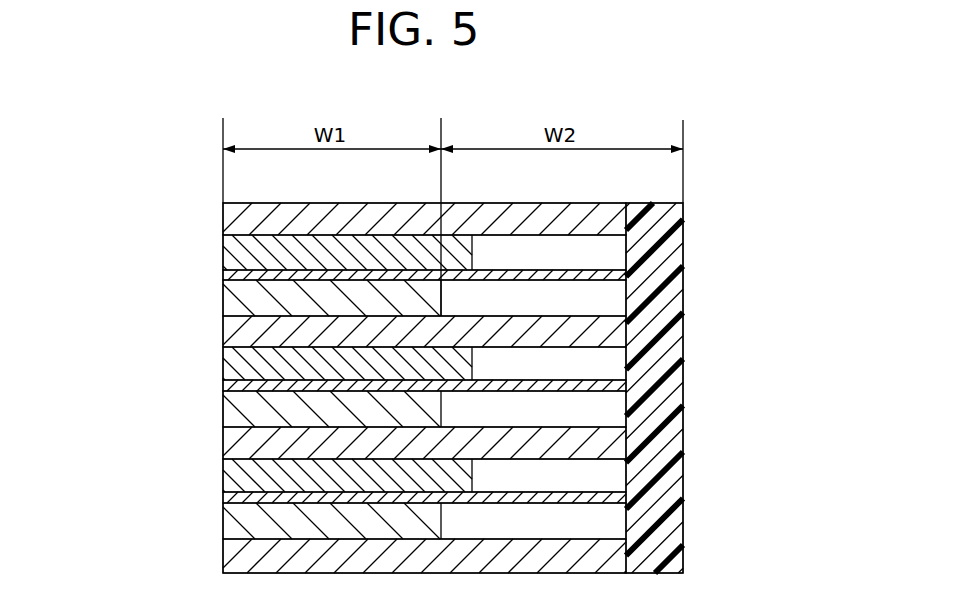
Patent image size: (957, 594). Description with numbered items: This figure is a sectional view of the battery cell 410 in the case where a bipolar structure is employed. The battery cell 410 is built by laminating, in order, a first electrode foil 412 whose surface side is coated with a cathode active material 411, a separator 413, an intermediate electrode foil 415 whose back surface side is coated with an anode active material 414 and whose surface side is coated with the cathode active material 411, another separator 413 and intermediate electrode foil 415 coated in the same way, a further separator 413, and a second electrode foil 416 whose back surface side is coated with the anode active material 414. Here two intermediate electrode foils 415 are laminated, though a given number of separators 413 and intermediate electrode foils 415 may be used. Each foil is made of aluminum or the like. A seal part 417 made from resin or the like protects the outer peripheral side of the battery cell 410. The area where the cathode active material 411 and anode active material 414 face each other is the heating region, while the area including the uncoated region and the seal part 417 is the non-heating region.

The battery cell 410 is at (668, 102).
The cathode active material 411 is at (223, 298).
The first electrode foil 412 is at (223, 556).
The separator 413 is at (223, 275).
The anode active material 414 is at (223, 253).
The intermediate electrode foil 415 is at (223, 331).
The second electrode foil 416 is at (223, 220).
The seal part 417 is at (657, 312).